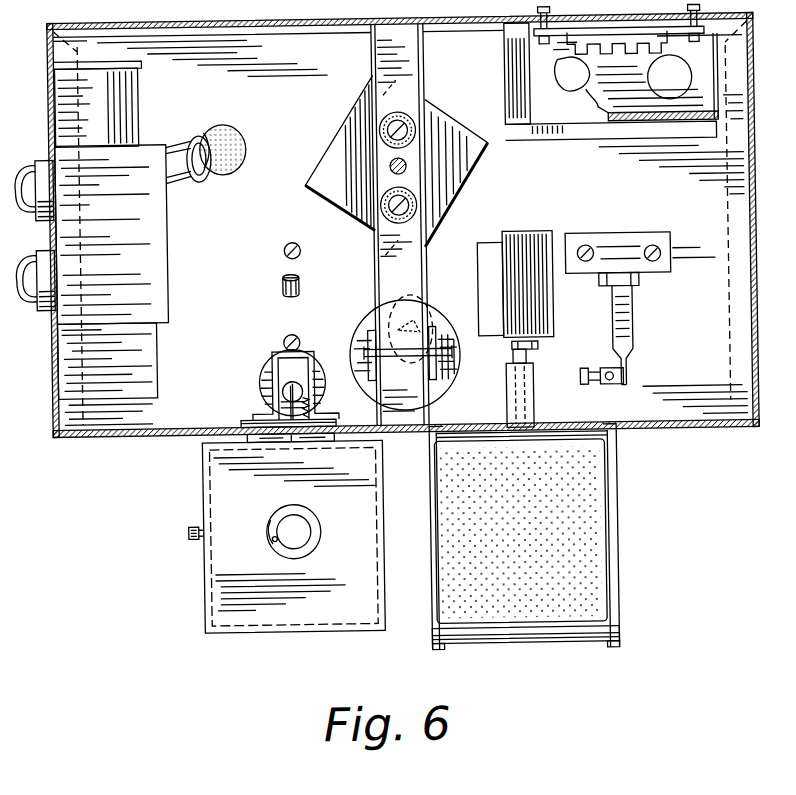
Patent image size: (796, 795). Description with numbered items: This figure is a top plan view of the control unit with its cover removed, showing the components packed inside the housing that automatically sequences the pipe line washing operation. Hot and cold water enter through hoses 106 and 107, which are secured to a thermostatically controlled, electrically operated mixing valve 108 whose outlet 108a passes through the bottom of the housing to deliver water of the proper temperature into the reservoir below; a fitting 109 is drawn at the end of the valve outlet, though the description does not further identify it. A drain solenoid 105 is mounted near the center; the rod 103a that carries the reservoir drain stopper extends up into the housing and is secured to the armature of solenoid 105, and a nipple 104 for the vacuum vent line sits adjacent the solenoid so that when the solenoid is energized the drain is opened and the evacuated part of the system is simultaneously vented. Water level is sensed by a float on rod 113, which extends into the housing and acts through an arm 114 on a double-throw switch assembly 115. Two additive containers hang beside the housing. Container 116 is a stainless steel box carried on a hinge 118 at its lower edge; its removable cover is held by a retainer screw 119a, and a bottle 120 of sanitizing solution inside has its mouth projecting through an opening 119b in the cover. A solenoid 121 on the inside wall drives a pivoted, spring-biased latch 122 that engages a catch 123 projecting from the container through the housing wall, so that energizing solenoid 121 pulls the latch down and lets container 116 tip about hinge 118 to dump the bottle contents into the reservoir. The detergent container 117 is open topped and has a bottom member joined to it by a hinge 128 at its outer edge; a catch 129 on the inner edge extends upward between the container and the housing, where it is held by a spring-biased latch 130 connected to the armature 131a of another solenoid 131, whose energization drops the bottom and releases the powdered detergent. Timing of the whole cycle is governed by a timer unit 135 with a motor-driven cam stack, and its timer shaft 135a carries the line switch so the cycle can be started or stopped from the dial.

The rod 103a is at (424, 322).
The nipple 104 is at (447, 352).
The solenoid 105 is at (357, 330).
The hose 106 is at (27, 165).
The hose 107 is at (27, 258).
The mixing valve 108 is at (148, 226).
The outlet 108a is at (172, 141).
The knob 109 is at (234, 128).
The rod 113 is at (600, 370).
The arm 114 is at (628, 326).
The double-throw switch assembly 115 is at (622, 246).
The container 116 is at (205, 584).
The additive container 117 is at (617, 561).
The hinge 118 is at (242, 426).
The retainer screw 119a is at (188, 530).
The opening 119b is at (268, 538).
The bottle 120 is at (316, 530).
The solenoid 121 is at (262, 374).
The latch 122 is at (300, 360).
The catch 123 is at (300, 395).
The hinge 128 is at (619, 633).
The catch 129 is at (528, 437).
The latch 130 is at (512, 370).
The solenoid 131 is at (488, 244).
The armature 131a is at (534, 349).
The timer unit 135 is at (340, 163).
The timer shaft 135a is at (407, 167).